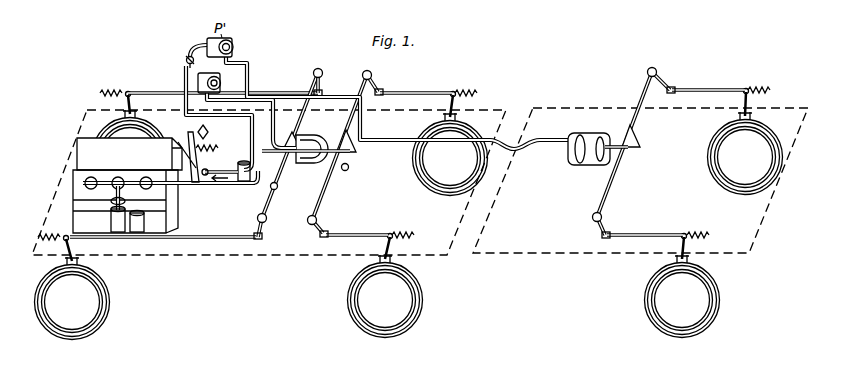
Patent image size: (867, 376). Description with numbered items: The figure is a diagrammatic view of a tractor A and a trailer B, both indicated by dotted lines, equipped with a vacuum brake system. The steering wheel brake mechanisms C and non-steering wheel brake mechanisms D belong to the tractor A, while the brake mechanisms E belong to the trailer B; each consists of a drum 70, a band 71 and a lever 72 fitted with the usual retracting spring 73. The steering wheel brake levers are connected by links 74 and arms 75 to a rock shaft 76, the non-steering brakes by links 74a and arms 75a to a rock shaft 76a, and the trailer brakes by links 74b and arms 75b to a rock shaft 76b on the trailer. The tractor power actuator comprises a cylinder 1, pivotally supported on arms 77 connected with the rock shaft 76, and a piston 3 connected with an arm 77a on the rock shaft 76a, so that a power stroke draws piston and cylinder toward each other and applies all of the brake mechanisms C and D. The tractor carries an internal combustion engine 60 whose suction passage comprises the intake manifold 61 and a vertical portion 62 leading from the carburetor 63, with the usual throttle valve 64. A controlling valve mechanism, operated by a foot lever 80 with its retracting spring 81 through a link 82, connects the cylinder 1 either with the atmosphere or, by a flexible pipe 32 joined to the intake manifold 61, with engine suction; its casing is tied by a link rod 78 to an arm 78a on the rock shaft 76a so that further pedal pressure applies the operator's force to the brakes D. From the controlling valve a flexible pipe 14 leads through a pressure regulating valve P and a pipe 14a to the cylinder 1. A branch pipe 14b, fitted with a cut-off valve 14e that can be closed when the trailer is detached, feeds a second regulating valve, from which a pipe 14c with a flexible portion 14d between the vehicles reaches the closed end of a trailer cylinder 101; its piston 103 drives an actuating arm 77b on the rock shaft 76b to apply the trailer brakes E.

The cylinder 1 is at (281, 149).
The piston 3 is at (306, 164).
The flexible pipe 14 is at (251, 131).
The pipe 14a is at (274, 130).
The branch pipe 14b is at (199, 52).
The pipe 14c is at (249, 73).
The flexible portion 14d is at (484, 135).
The cut-off valve 14e is at (186, 60).
The flexible pipe 32 is at (230, 187).
The internal combustion engine 60 is at (92, 151).
The intake manifold 61 is at (80, 184).
The vertical portion 62 is at (111, 201).
The carburetor 63 is at (146, 218).
The throttle valve 64 is at (110, 222).
The drum 70 is at (50, 314).
The band 71 is at (100, 326).
The lever 72 is at (133, 104).
The retracting spring 73 is at (406, 166).
The links 74 is at (244, 245).
The links 74a is at (335, 262).
The links 74b is at (675, 235).
The arms 75 is at (322, 82).
The arms 75a is at (372, 100).
The arms 75b is at (660, 78).
The rock shaft 76 is at (271, 190).
The rock shaft 76a is at (325, 190).
The rock shaft 76b is at (621, 175).
The arms 77 is at (298, 137).
The arm 77a is at (356, 148).
The actuating arm 77b is at (640, 138).
The link rod 78 is at (266, 189).
The arm 78a is at (350, 168).
The foot lever 80 is at (185, 154).
The retracting spring 81 is at (205, 146).
The link 82 is at (226, 164).
The cylinder 101 is at (573, 166).
The piston 103 is at (600, 134).
The pressure regulating valve P is at (196, 80).
The tractor A is at (269, 195).
The trailer B is at (640, 193).
The steering wheel brake mechanisms C is at (150, 130).
The non-steering wheel brake mechanisms D is at (478, 167).
The brake mechanisms E is at (774, 164).